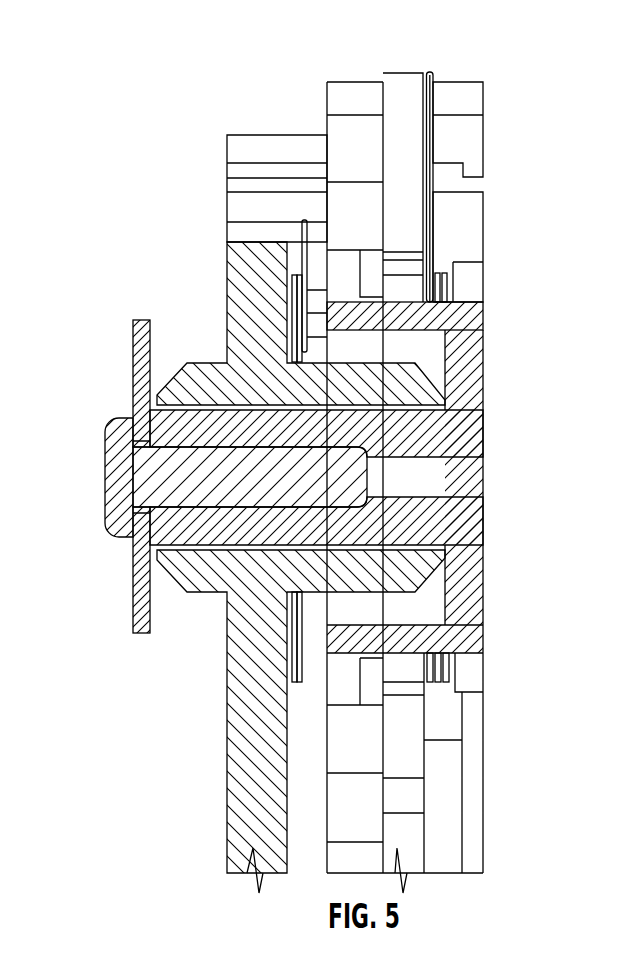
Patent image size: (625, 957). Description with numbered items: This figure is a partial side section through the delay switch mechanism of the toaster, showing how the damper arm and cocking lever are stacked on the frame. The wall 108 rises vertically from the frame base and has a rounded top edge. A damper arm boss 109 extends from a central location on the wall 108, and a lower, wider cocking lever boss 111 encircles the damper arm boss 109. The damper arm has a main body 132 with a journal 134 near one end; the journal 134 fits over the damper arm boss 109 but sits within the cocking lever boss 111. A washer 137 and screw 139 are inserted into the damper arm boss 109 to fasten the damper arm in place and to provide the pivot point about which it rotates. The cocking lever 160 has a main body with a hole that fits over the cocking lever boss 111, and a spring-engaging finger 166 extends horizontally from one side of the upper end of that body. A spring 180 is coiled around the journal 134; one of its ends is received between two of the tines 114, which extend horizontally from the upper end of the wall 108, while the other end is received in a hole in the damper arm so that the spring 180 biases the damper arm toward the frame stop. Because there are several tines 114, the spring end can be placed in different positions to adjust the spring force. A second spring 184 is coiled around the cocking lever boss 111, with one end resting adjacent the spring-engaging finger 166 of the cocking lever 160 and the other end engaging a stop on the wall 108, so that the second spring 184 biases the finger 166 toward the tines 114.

The wall 108 is at (472, 397).
The damper arm boss 109 is at (387, 438).
The cocking lever boss 111 is at (420, 322).
The tines 114 is at (268, 210).
The main body 132 is at (250, 732).
The journal 134 is at (198, 375).
The washer 137 is at (140, 585).
The screw 139 is at (122, 472).
The cocking lever 160 is at (400, 88).
The spring-engaging finger 166 is at (463, 98).
The spring 180 is at (298, 338).
The second spring 184 is at (435, 216).